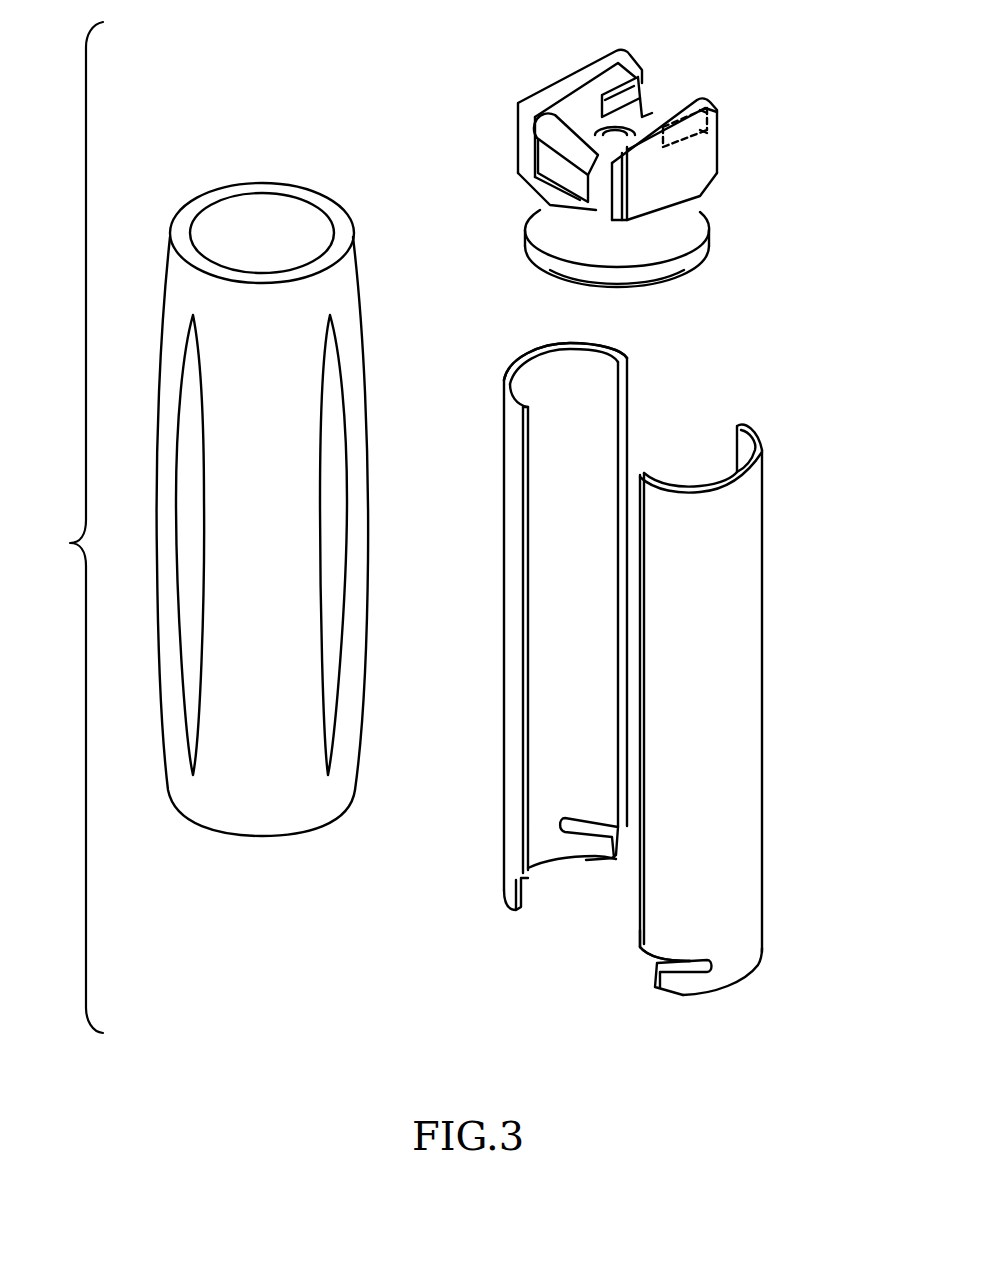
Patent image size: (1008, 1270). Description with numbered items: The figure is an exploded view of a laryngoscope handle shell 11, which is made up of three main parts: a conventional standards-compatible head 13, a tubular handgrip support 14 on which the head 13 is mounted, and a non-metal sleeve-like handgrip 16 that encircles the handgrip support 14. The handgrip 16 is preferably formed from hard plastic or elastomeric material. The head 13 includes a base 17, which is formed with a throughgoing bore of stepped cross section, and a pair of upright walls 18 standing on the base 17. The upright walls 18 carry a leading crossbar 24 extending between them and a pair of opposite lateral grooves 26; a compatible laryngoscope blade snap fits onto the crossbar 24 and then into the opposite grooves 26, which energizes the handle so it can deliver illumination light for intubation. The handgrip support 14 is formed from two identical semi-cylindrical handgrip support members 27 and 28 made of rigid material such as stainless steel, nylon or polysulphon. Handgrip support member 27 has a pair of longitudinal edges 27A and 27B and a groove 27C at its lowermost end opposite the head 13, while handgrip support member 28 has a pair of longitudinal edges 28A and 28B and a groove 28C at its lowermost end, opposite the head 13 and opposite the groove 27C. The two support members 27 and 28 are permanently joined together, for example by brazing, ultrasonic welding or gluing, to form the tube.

The handle shell 11 is at (68, 527).
The head 13 is at (694, 54).
The handgrip support 14 is at (791, 379).
The handgrip 16 is at (297, 163).
The base 17 is at (688, 223).
The upright walls 18 is at (565, 82).
The crossbar 24 is at (565, 142).
The lateral grooves 26 is at (631, 90).
The handgrip support member 27 is at (752, 738).
The longitudinal edge 27A is at (736, 443).
The longitudinal edge 27B is at (640, 923).
The groove 27C is at (684, 965).
The handgrip support member 28 is at (504, 594).
The longitudinal edge 28A is at (630, 372).
The longitudinal edge 28B is at (530, 858).
The groove 28C is at (583, 830).